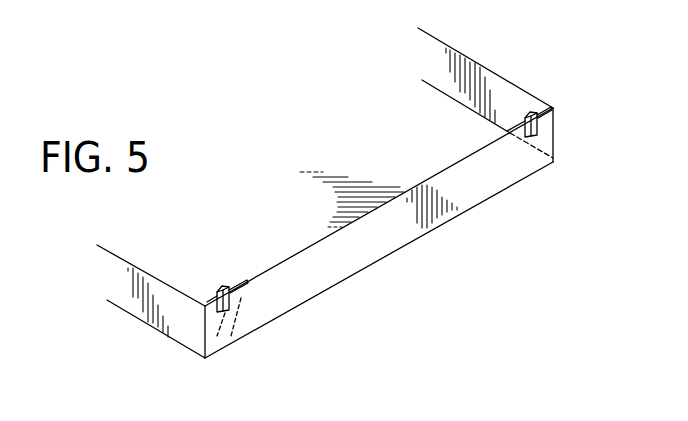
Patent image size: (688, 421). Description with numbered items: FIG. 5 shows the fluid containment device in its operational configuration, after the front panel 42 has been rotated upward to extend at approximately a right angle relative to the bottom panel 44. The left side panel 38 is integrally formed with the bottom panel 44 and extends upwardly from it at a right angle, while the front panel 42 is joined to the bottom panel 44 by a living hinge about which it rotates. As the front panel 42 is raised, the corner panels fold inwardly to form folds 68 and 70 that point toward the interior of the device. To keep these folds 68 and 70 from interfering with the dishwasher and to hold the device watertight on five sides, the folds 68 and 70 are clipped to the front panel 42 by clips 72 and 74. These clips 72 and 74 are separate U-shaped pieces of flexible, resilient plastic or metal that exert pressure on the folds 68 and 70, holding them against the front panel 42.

The left side panel 38 is at (122, 302).
The front panel 42 is at (508, 168).
The bottom panel 44 is at (428, 166).
The fold 68 is at (225, 269).
The fold 70 is at (511, 113).
The clip 72 is at (231, 307).
The clip 74 is at (540, 126).